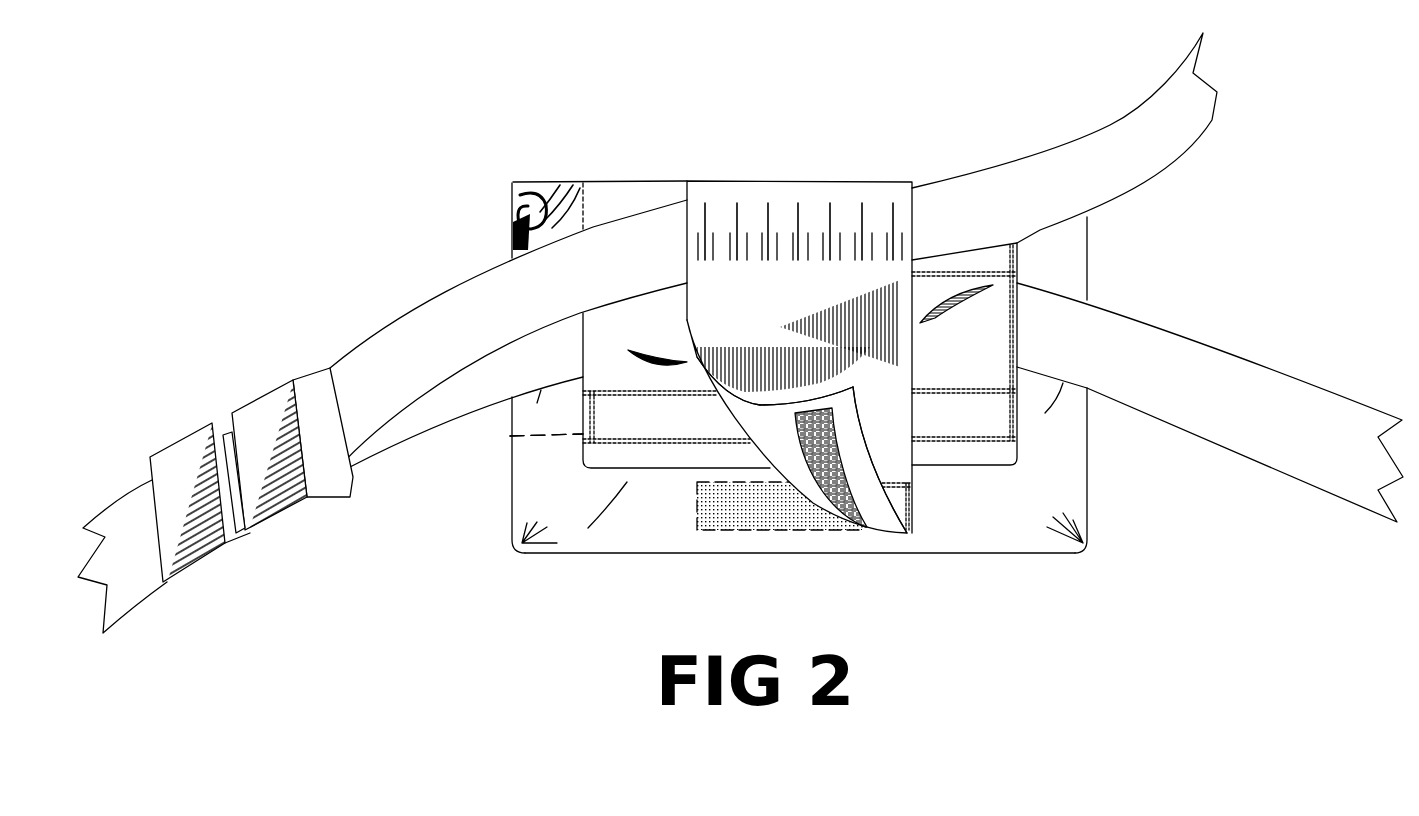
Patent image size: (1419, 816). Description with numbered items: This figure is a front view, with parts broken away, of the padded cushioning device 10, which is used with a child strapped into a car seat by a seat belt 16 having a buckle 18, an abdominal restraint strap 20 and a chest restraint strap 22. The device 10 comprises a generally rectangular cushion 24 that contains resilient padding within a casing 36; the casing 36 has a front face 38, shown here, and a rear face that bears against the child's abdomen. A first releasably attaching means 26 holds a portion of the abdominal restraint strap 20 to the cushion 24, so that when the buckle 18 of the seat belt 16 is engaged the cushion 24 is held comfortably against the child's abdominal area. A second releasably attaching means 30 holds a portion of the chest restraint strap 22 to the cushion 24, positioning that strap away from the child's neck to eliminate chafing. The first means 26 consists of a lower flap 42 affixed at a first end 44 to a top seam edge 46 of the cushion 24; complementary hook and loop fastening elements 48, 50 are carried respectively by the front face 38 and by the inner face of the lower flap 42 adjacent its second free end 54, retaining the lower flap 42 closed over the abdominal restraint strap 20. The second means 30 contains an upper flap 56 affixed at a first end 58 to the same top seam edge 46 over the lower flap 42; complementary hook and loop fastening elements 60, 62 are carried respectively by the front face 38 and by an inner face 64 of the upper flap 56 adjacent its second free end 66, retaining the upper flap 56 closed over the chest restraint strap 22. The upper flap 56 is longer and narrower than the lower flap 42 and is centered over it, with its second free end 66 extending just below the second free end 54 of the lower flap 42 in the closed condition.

The padded cushioning device 10 is at (786, 101).
The seat belt 16 is at (1162, 62).
The buckle 18 is at (257, 413).
The abdominal restraint strap 20 is at (1297, 397).
The chest restraint strap 22 is at (467, 297).
The cushion 24 is at (502, 513).
The first releasably attaching means 26 is at (606, 477).
The second releasably attaching means 30 is at (923, 512).
The casing 36 is at (1063, 502).
The front face 38 is at (649, 532).
The lower flap 42 is at (1028, 448).
The first end 44 is at (637, 180).
The top seam edge 46 is at (570, 182).
The hook and loop fastening element 48 is at (515, 438).
The hook and loop fastening element 50 is at (546, 435).
The second free end 54 is at (682, 470).
The upper flap 56 is at (676, 312).
The first end 58 is at (838, 183).
The hook and loop fastening element 60 is at (790, 507).
The hook and loop fastening element 62 is at (827, 437).
The inner face 64 is at (765, 425).
The second free end 66 is at (867, 475).